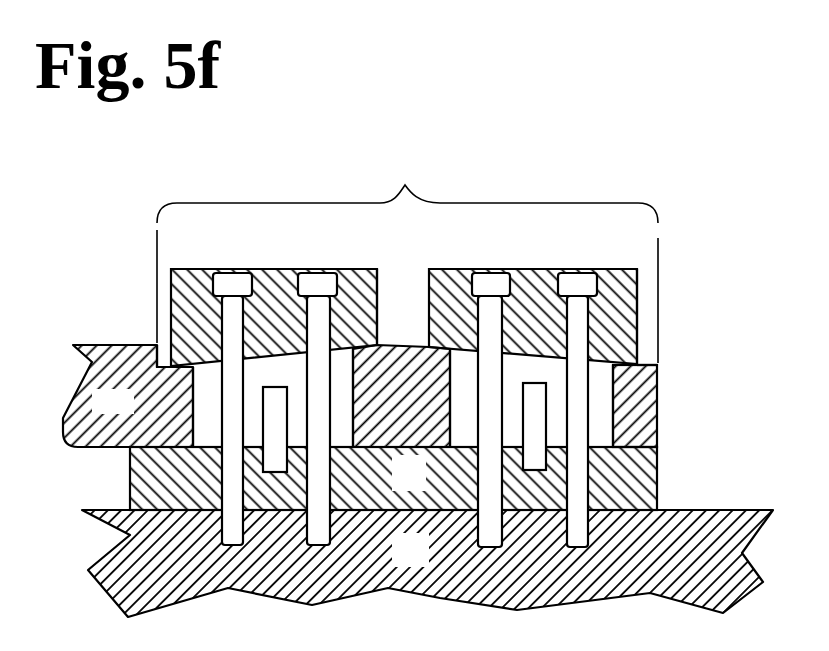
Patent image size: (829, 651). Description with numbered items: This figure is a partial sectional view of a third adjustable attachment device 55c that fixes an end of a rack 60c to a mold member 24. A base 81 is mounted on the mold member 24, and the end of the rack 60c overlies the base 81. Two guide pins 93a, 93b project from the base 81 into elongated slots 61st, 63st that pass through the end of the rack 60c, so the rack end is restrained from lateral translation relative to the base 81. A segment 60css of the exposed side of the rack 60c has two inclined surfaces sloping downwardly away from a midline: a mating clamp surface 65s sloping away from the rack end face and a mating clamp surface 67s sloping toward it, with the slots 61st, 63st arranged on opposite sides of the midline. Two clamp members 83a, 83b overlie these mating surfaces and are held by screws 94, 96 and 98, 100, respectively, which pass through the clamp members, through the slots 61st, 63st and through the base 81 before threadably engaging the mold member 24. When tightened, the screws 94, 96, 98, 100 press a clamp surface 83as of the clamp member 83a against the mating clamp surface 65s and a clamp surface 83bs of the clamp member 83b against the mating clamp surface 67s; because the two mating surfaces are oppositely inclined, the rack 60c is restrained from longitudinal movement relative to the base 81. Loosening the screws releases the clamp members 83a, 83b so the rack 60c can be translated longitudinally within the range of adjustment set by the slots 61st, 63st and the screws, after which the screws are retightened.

The third adjustable attachment device 55c is at (662, 147).
The mold member 24 is at (423, 560).
The base 81 is at (420, 483).
The rack 60c is at (130, 410).
The segment of exposed side of rack 60css is at (405, 185).
The clamp member 83a is at (356, 268).
The clamp member 83b is at (458, 277).
The clamp surface 83as is at (377, 342).
The clamp surface 83bs is at (632, 348).
The mating clamp surface 65s is at (170, 352).
The mating clamp surface 67s is at (650, 365).
The guide pin 93a is at (282, 367).
The guide pin 93b is at (538, 422).
The elongated slot 61st is at (275, 420).
The elongated slot 63st is at (544, 371).
The screw 94 is at (233, 280).
The screw 96 is at (325, 283).
The screw 98 is at (480, 287).
The screw 100 is at (570, 291).